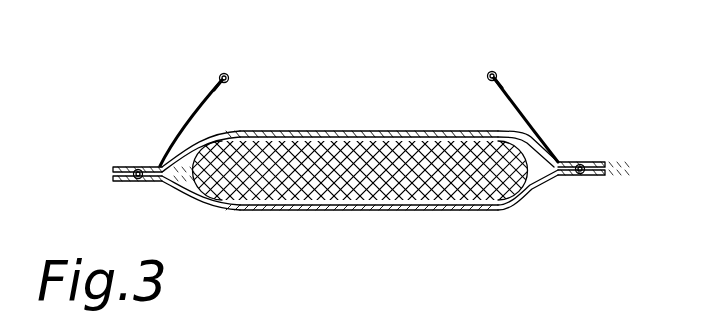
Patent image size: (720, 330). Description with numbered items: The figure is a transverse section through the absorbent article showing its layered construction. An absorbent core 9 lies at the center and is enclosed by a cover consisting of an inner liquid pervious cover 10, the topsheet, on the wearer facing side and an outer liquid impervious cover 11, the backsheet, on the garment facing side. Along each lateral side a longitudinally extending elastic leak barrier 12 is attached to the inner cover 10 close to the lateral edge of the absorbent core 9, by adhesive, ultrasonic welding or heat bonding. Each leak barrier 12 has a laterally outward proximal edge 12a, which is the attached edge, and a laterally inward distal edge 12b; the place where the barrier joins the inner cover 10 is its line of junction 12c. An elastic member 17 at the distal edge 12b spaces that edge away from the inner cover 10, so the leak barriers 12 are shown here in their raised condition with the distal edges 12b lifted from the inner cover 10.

The absorbent core 9 is at (334, 167).
The inner liquid pervious cover 10 is at (399, 135).
The outer liquid impervious cover 11 is at (325, 211).
The inner elastic leak barrier 12 is at (188, 113).
The proximal edge 12a is at (125, 167).
The distal edge 12b is at (229, 77).
The line of junction 12c is at (161, 165).
The elastic member 17 is at (225, 73).